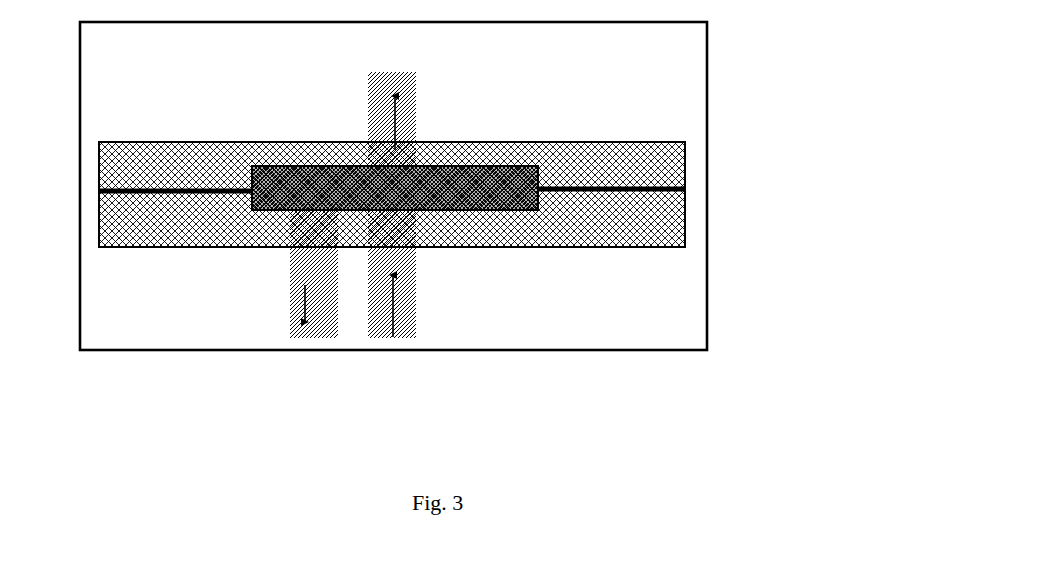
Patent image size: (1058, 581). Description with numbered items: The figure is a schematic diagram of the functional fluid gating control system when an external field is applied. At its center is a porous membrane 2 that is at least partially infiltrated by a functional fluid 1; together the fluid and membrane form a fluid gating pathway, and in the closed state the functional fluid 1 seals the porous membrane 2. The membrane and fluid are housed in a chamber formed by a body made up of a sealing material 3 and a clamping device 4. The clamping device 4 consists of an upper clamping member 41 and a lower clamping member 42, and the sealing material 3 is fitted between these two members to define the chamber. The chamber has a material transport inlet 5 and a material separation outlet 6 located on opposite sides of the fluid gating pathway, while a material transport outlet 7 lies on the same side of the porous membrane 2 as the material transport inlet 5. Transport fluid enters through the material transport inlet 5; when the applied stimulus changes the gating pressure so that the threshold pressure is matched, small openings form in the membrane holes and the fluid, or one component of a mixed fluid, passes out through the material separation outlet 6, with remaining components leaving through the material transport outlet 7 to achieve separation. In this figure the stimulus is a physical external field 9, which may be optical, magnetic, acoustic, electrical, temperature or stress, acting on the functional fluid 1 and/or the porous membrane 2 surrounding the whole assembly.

The functional fluid 1 is at (252, 176).
The porous membrane 2 is at (310, 172).
The sealing material 3 is at (100, 190).
The clamping device 4 is at (483, 194).
The upper clamping member 41 is at (668, 167).
The lower clamping member 42 is at (668, 224).
The material transport inlet 5 is at (403, 305).
The material separation outlet 6 is at (398, 112).
The material transport outlet 7 is at (297, 297).
The external field 9 is at (708, 73).